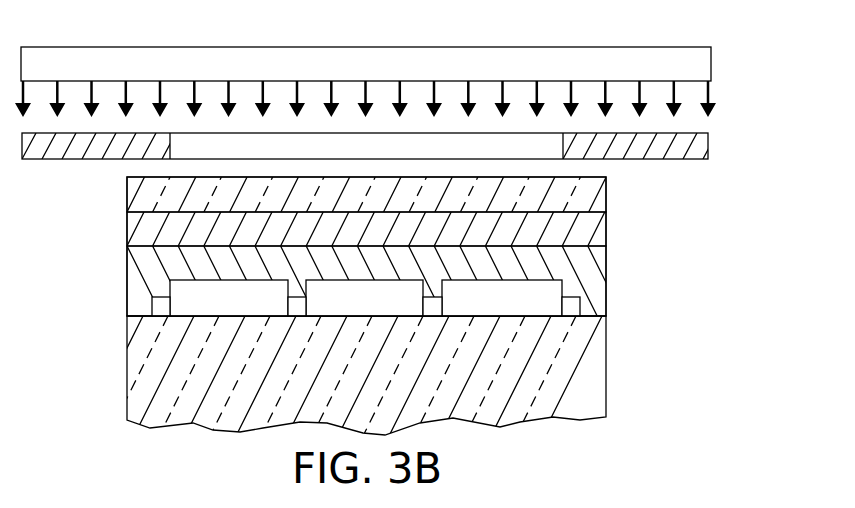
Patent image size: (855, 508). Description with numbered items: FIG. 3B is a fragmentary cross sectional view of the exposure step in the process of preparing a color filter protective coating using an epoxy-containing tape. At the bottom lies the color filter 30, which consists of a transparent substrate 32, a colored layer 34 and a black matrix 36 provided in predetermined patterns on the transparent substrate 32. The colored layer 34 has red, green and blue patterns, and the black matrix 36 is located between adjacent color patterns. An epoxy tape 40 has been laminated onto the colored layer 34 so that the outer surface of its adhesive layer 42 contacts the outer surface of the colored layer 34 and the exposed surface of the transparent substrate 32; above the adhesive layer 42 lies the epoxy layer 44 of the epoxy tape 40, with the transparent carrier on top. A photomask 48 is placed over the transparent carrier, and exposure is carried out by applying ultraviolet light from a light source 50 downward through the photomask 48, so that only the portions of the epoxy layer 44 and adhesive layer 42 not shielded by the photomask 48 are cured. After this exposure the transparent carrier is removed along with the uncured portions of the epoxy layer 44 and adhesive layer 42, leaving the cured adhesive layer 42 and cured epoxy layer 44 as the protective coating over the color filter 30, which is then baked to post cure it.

The light source 50 is at (712, 61).
The photomask 48 is at (708, 143).
The epoxy tape 40 is at (127, 193).
The epoxy layer 44 is at (606, 227).
The adhesive layer 42 is at (606, 267).
The color filter 30 is at (122, 332).
The colored layer 34 is at (546, 295).
The black matrix 36 is at (432, 303).
The transparent substrate 32 is at (597, 382).